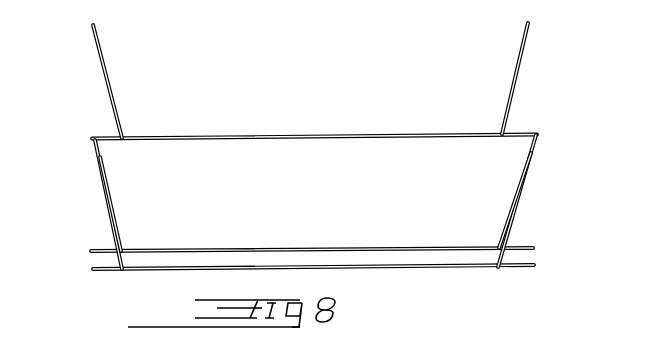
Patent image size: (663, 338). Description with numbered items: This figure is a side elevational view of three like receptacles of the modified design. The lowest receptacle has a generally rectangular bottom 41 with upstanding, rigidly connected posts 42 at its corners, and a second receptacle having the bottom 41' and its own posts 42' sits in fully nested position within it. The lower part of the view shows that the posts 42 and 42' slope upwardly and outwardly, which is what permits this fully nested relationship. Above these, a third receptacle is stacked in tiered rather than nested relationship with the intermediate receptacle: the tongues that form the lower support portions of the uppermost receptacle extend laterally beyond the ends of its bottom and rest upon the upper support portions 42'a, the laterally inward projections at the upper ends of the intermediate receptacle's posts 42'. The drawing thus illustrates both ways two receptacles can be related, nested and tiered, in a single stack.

The bottom 41 is at (313, 278).
The bottom 41' is at (312, 236).
The post 42 is at (322, 202).
The post 42' is at (504, 200).
The upper support portion 42'a is at (84, 198).